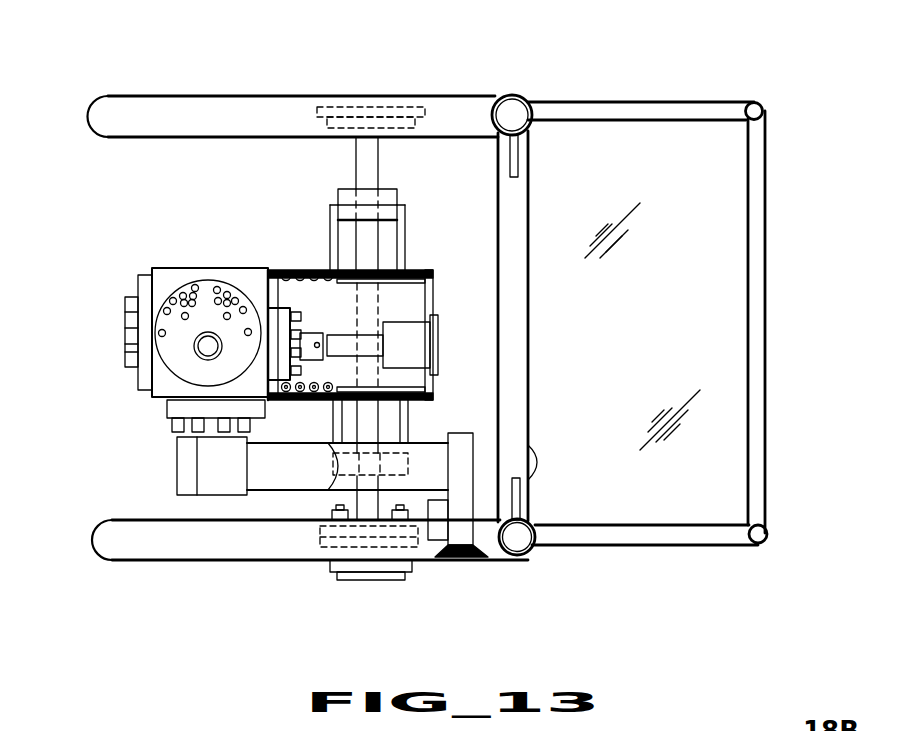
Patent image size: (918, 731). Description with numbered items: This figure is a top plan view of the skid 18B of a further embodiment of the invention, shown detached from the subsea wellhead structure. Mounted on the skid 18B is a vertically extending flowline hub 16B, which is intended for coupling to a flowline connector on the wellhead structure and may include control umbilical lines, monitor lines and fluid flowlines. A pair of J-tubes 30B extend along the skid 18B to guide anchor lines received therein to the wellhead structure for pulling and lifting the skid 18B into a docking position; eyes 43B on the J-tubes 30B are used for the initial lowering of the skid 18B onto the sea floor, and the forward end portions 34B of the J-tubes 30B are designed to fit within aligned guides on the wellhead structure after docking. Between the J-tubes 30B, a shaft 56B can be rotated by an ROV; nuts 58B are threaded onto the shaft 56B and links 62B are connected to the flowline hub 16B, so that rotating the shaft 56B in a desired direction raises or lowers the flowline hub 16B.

The flowline hub 16B is at (178, 374).
The skid 18B is at (580, 83).
The J-tubes 30B is at (408, 98).
The forward end portions 34B is at (143, 132).
The eyes 43B is at (518, 160).
The shaft 56B is at (378, 162).
The nuts 58B is at (333, 200).
The links 62B is at (405, 237).